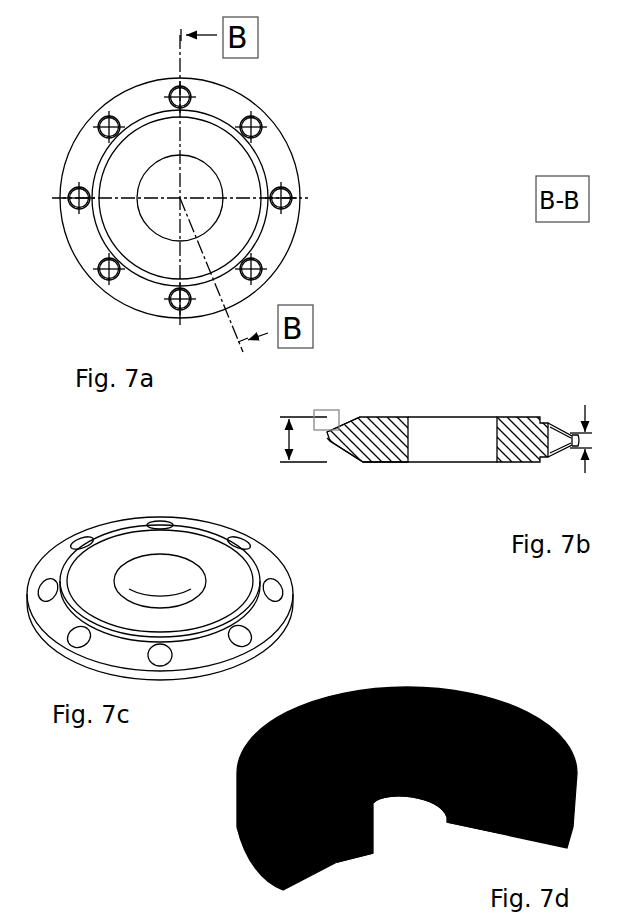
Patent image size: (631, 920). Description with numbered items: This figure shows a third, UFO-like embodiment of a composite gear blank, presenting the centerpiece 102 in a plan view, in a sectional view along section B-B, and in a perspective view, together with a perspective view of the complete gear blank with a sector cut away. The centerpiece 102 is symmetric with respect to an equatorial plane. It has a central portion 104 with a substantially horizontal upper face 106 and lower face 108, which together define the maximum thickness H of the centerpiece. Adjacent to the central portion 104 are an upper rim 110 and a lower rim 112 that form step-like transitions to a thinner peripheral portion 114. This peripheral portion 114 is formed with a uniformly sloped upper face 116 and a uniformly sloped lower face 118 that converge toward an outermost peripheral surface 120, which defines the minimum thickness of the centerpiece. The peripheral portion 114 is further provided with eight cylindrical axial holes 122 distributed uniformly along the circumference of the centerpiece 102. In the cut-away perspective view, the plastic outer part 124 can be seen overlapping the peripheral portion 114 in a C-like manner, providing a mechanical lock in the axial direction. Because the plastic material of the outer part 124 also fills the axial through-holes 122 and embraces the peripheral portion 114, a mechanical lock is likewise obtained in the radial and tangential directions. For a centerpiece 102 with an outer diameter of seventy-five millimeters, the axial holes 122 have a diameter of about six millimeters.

In FIG. 7a, the centerpiece 102 is at (300, 132).
In FIG. 7b, the centerpiece 102 is at (454, 361).
In FIG. 7c, the centerpiece 102 is at (183, 583).
In FIG. 7d, the centerpiece 102 is at (407, 767).
In FIG. 7b, the central portion 104 is at (410, 431).
In FIG. 7d, the central portion 104 is at (446, 823).
In FIG. 7b, the upper face 106 is at (521, 417).
In FIG. 7c, the upper face 106 is at (193, 549).
In FIG. 7b, the lower face 108 is at (509, 462).
In FIG. 7b, the upper rim 110 is at (368, 417).
In FIG. 7c, the upper rim 110 is at (70, 567).
In FIG. 7b, the lower rim 112 is at (369, 458).
In FIG. 7b, the peripheral portion 114 is at (349, 441).
In FIG. 7d, the peripheral portion 114 is at (499, 838).
In FIG. 7b, the sloped upper face 116 is at (337, 430).
In FIG. 7c, the sloped upper face 116 is at (262, 565).
In FIG. 7b, the sloped lower face 118 is at (338, 443).
In FIG. 7b, the outermost peripheral surface 120 is at (327, 437).
In FIG. 7c, the outermost peripheral surface 120 is at (272, 645).
In FIG. 7a, the cylindrical axial holes 122 is at (252, 121).
In FIG. 7c, the cylindrical axial holes 122 is at (159, 658).
In FIG. 7d, the cylindrical axial holes 122 is at (337, 860).
In FIG. 7d, the plastic outer part 124 is at (533, 716).